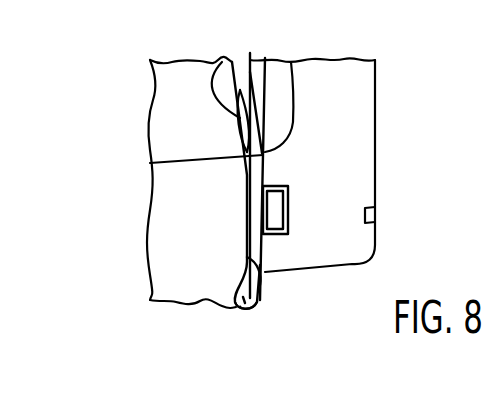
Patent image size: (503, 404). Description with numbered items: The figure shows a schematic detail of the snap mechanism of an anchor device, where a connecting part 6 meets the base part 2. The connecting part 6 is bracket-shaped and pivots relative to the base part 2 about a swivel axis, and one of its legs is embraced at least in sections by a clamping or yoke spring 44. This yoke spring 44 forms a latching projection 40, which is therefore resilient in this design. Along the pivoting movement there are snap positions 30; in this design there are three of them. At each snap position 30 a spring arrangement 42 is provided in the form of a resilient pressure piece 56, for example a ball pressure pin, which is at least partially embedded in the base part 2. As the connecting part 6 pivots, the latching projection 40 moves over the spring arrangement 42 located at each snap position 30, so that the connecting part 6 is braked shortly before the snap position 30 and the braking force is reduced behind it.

The base part 2 is at (163, 112).
The connecting part 6 is at (348, 123).
The snap position 30 is at (263, 293).
The latching projection 40 is at (218, 67).
The spring arrangement 42 is at (240, 306).
The clamping or yoke spring 44 is at (291, 63).
The resilient pressure piece 56 is at (240, 306).